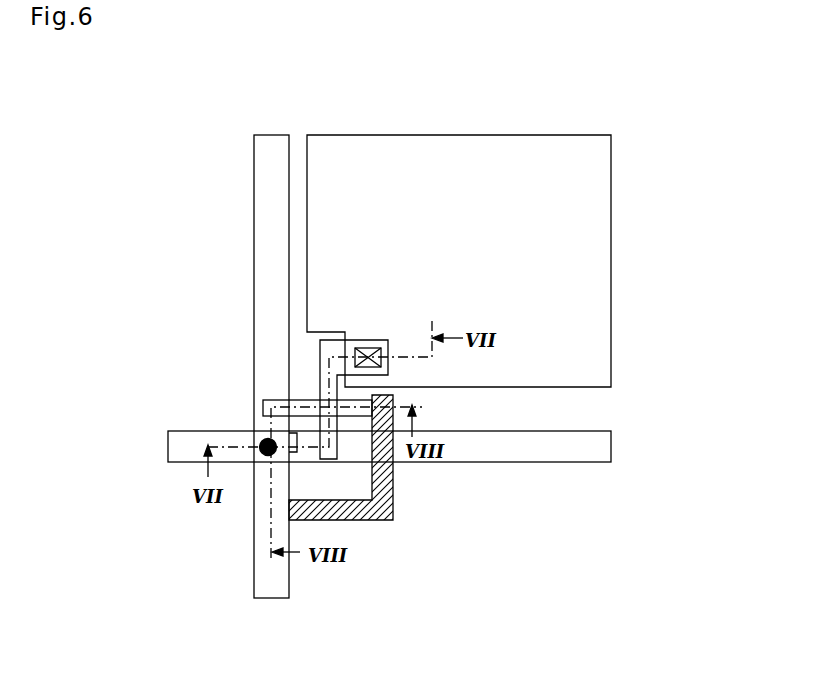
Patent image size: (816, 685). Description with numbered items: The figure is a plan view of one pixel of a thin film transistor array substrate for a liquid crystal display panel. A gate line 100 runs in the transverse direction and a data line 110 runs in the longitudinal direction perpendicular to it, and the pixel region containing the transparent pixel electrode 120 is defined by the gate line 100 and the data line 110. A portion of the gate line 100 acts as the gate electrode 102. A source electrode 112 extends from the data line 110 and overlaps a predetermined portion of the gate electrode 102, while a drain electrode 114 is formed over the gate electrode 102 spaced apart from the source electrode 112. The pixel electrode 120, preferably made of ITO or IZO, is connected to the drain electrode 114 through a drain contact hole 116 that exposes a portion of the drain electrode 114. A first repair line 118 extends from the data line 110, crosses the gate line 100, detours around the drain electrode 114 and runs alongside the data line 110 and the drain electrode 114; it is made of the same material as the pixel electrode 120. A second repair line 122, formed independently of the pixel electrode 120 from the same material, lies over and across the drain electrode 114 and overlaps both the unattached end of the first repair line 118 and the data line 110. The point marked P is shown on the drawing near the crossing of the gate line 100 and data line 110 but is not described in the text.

The gate line 100 is at (590, 462).
The data line 110 is at (258, 243).
The pixel electrode 120 is at (611, 230).
The second repair line 122 is at (305, 399).
The first repair line 118 is at (338, 455).
The drain contact hole 116 is at (381, 328).
The drain electrode 114 is at (373, 467).
The source electrode 112 is at (293, 453).
The gate electrode 102 is at (313, 455).
The pixel point P is at (258, 432).